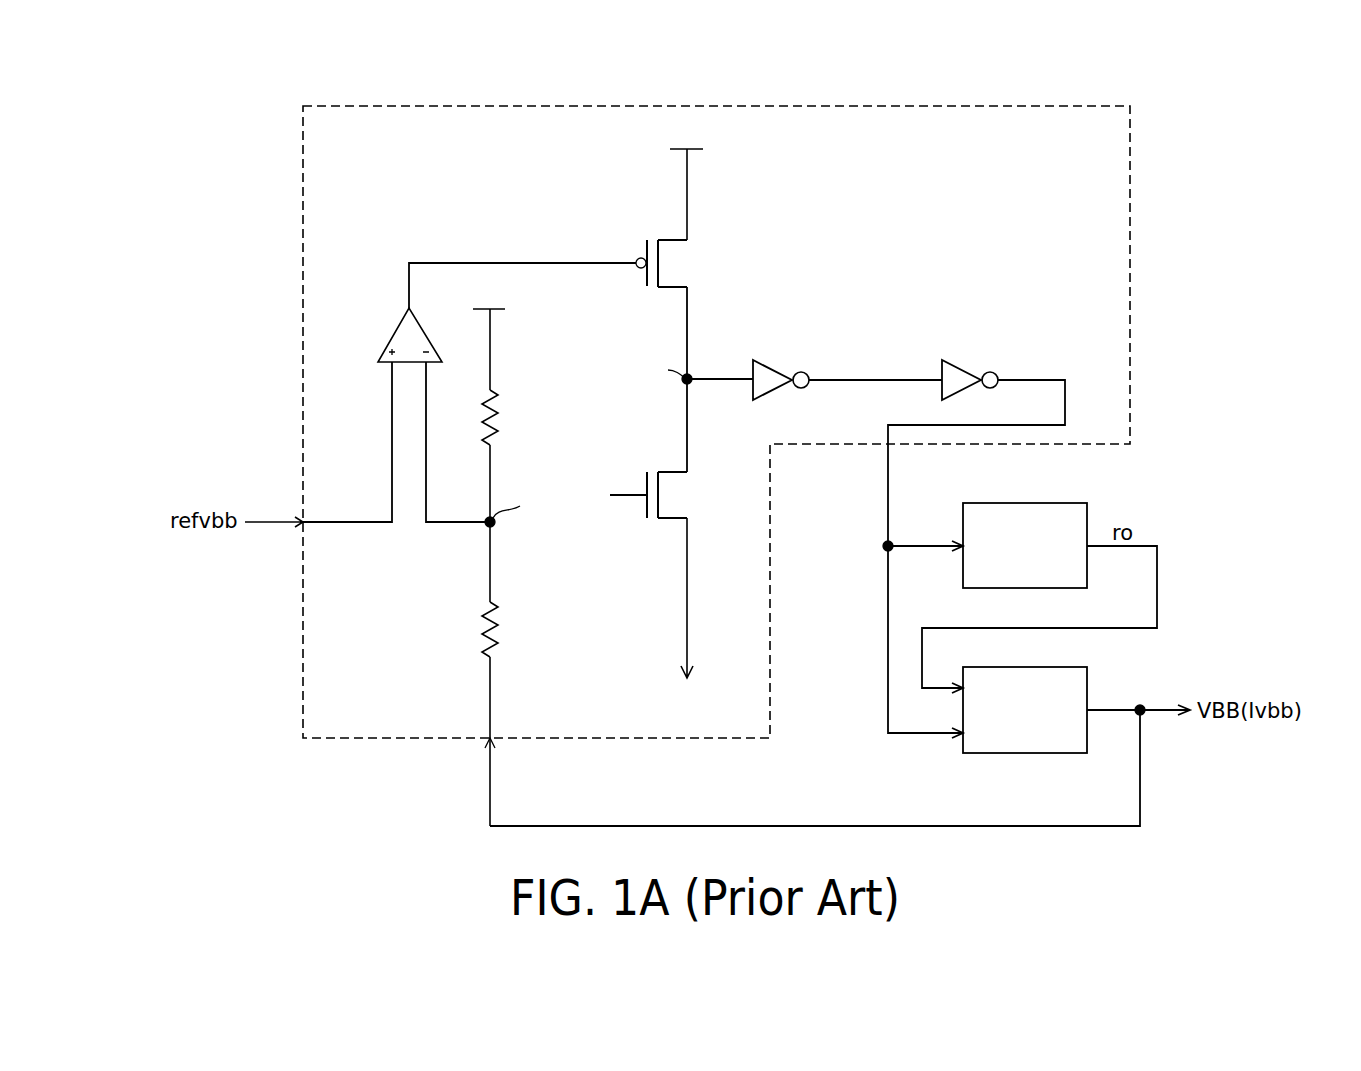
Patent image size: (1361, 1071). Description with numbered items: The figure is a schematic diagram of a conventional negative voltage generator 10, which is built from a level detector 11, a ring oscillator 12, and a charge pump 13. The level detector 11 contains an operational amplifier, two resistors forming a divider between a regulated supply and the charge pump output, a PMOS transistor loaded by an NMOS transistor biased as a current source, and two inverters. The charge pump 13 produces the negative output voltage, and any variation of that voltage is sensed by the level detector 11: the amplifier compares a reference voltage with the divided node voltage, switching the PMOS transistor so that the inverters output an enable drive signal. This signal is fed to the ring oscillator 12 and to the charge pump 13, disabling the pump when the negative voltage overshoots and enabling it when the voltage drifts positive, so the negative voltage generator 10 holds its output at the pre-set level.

The negative voltage generator 10 is at (320, 784).
The level detector 11 is at (735, 97).
The ring oscillator 12 is at (1030, 503).
The charge pump 13 is at (1031, 753).